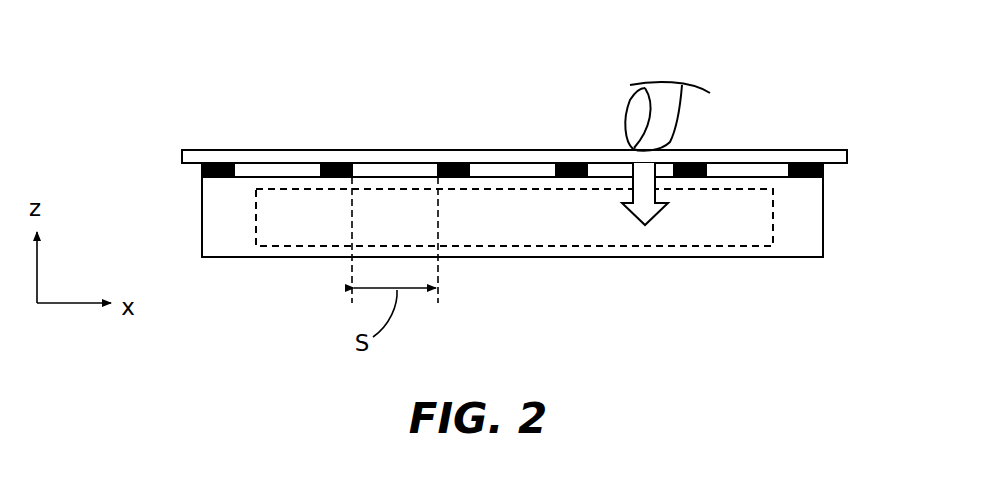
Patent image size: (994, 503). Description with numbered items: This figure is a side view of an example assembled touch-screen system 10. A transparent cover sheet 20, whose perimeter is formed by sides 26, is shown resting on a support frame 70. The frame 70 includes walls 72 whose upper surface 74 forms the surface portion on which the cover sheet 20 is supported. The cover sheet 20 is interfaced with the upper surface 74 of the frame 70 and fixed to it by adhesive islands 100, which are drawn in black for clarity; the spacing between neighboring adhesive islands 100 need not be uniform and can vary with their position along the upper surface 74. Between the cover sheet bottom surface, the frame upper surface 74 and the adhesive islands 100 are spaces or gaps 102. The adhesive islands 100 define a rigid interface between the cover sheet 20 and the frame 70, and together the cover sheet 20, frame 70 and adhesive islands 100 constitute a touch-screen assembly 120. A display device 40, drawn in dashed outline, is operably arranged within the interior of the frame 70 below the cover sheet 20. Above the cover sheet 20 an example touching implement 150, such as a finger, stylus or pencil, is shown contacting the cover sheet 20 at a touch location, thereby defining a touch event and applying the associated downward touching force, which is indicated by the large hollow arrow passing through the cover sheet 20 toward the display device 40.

The touch-screen system 10 is at (274, 63).
The cover sheet 20 is at (244, 130).
The sides 26 is at (181, 156).
The touch-screen assembly 120 is at (168, 131).
The support frame 70 is at (191, 201).
The walls 72 is at (225, 228).
The adhesive islands 100 is at (340, 165).
The gaps 102 is at (283, 170).
The upper surface 74 is at (500, 177).
The display device 40 is at (313, 230).
The touching implement 150 is at (667, 112).